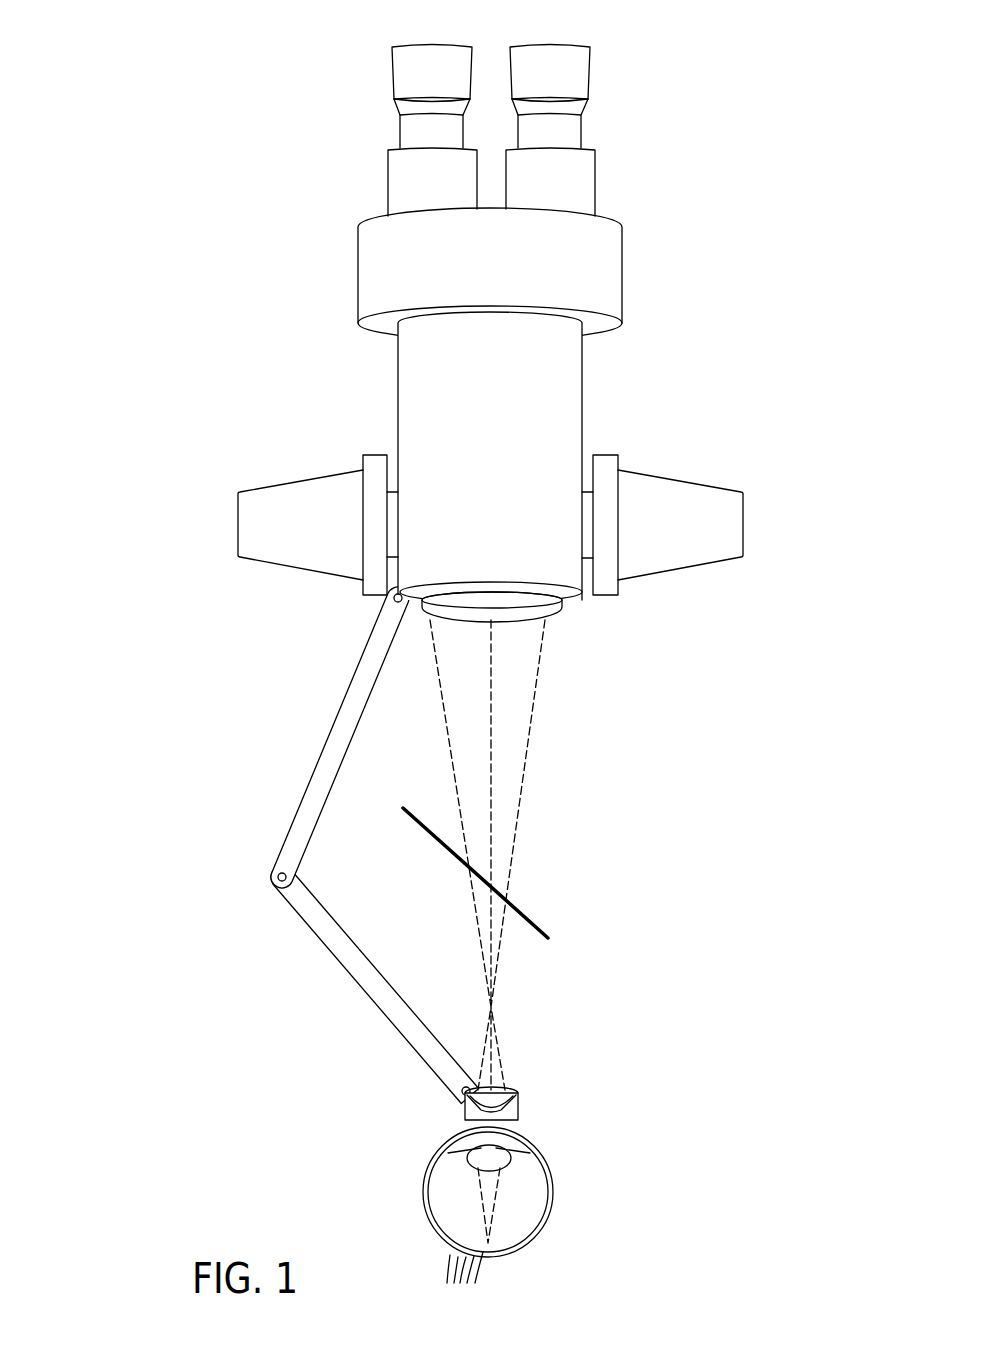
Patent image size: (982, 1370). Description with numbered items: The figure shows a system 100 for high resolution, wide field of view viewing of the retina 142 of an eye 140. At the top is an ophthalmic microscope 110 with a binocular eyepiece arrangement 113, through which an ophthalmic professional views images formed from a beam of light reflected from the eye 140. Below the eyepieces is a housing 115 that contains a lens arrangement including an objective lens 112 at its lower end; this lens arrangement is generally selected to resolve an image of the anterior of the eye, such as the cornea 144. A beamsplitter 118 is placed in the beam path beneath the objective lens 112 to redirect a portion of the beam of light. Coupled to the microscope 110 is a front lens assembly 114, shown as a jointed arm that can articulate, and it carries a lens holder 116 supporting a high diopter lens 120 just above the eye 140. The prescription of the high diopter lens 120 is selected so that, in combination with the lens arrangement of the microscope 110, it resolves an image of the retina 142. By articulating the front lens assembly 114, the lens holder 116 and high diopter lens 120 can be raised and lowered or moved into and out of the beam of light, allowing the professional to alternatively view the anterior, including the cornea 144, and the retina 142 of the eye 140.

The system 100 is at (172, 44).
The ophthalmic microscope 110 is at (260, 204).
The binocular eyepiece arrangement 113 is at (676, 35).
The housing 115 is at (565, 380).
The objective lens 112 is at (535, 618).
The front lens assembly 114 is at (215, 612).
The beamsplitter 118 is at (530, 918).
The high diopter lens 120 is at (533, 1083).
The lens holder 116 is at (463, 1107).
The eye 140 is at (553, 1195).
The cornea 144 is at (463, 1127).
The retina 142 is at (503, 1257).